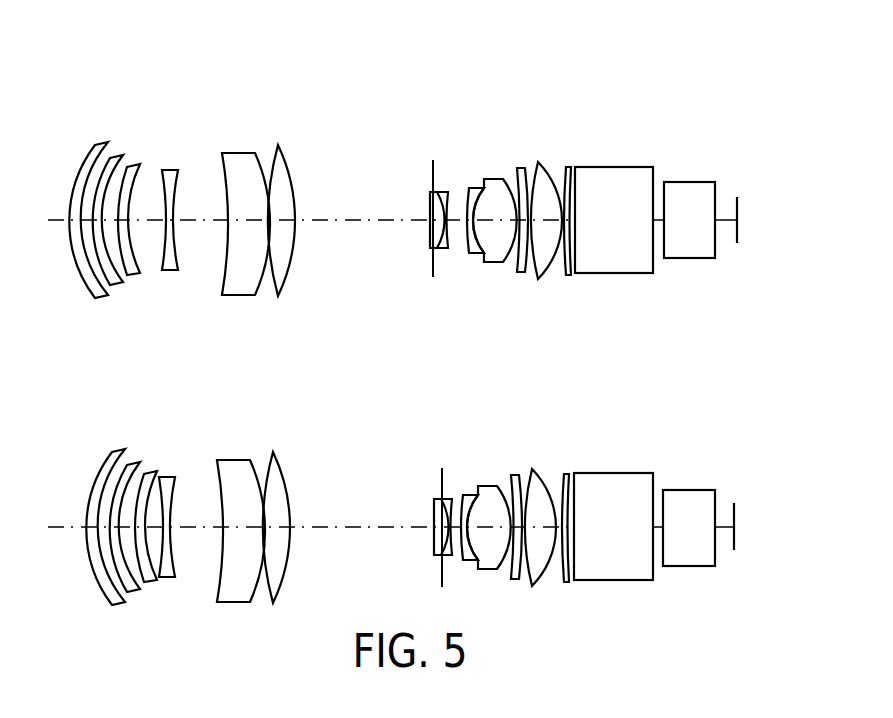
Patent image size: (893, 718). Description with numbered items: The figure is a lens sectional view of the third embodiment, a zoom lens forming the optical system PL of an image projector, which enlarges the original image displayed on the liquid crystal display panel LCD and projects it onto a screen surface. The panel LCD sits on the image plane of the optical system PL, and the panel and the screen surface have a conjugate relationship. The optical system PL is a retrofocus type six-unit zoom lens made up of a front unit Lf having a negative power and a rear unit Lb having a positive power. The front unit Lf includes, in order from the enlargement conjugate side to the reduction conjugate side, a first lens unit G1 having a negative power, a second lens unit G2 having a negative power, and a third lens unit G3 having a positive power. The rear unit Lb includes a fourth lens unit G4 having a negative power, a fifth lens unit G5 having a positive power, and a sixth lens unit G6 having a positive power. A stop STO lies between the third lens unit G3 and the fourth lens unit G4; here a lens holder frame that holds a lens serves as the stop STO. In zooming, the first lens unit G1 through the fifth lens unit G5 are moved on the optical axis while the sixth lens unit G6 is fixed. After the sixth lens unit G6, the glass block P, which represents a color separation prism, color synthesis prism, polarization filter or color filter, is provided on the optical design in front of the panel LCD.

The optical system PL is at (580, 85).
The front unit Lf is at (55, 140).
The rear unit Lb is at (417, 138).
The first lens unit G1 is at (153, 283).
The second lens unit G2 is at (168, 443).
The third lens unit G3 is at (257, 443).
The fourth lens unit G4 is at (442, 432).
The fifth lens unit G5 is at (507, 432).
The sixth lens unit G6 is at (557, 283).
The stop STO is at (442, 360).
The glass block P is at (607, 183).
The liquid crystal display panel LCD is at (738, 207).